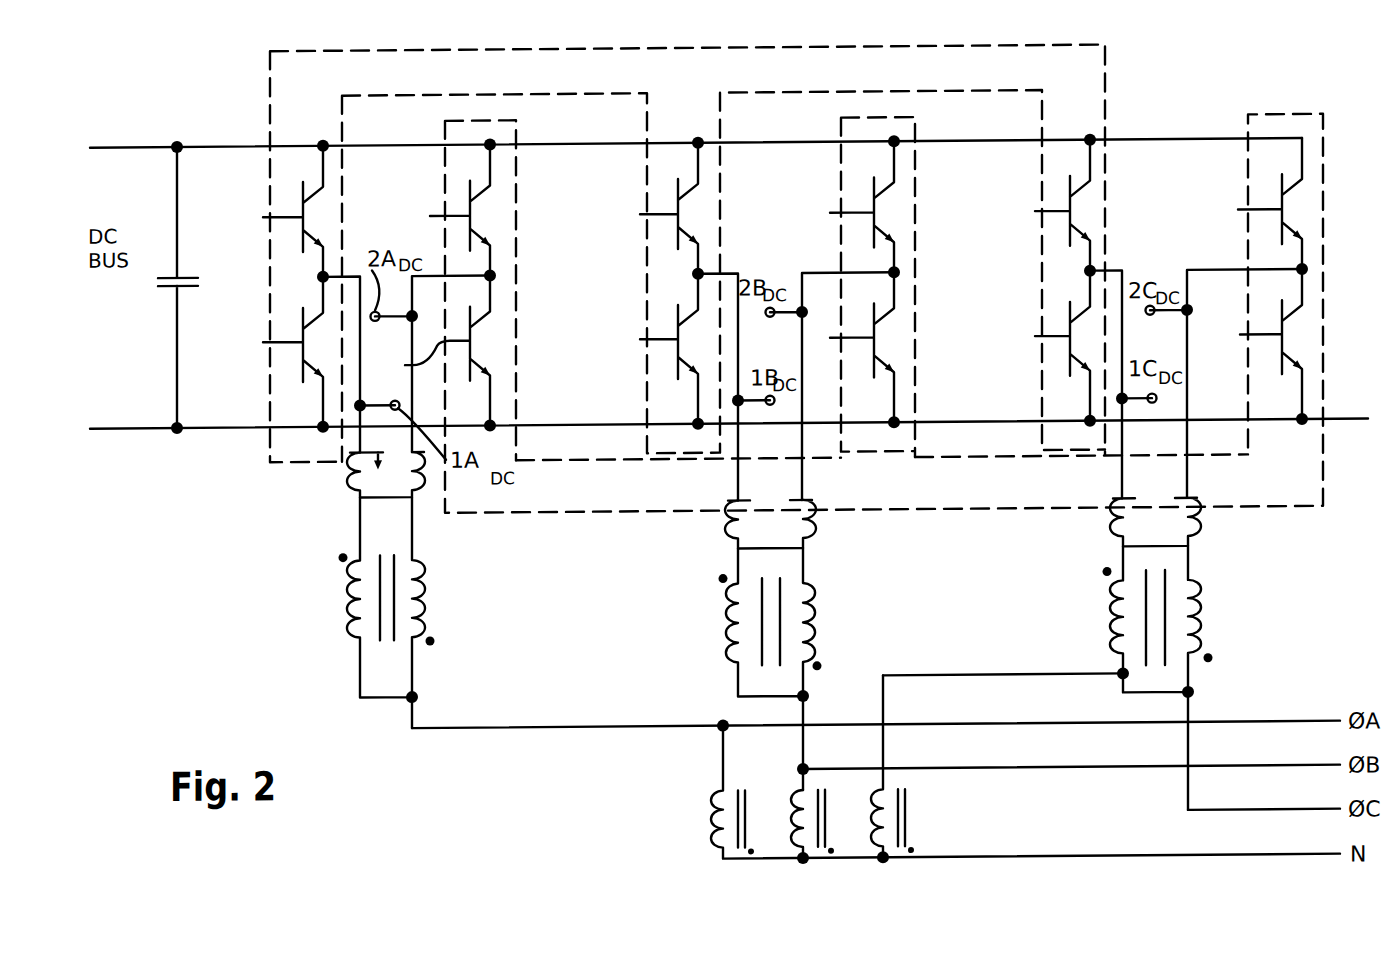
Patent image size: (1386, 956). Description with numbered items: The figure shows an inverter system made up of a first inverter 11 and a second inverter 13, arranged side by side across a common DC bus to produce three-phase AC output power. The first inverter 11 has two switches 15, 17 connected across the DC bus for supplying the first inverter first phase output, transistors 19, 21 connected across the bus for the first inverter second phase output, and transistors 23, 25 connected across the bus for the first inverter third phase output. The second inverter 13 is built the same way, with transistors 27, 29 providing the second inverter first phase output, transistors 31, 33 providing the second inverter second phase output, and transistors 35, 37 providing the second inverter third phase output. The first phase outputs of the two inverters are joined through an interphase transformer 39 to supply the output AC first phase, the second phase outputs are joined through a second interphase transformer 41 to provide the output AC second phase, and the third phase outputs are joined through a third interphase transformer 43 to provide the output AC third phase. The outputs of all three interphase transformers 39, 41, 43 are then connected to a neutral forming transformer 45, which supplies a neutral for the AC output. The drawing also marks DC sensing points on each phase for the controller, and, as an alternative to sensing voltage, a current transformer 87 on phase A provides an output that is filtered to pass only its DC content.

The first inverter 11 is at (1106, 89).
The second inverter 13 is at (962, 514).
The switch 15 is at (302, 192).
The switch 17 is at (300, 380).
The transistor 19 is at (676, 190).
The transistor 21 is at (678, 372).
The transistor 23 is at (1068, 191).
The transistor 25 is at (1070, 375).
The transistor 27 is at (469, 192).
The transistor 29 is at (480, 327).
The transistor 31 is at (872, 190).
The transistor 33 is at (875, 381).
The transistor 35 is at (1280, 191).
The transistor 37 is at (1281, 376).
The interphase transformer 39 is at (291, 612).
The second interphase transformer 41 is at (700, 618).
The third interphase transformer 43 is at (1087, 618).
The neutral forming transformer 45 is at (968, 828).
The current transformer 87 is at (421, 499).